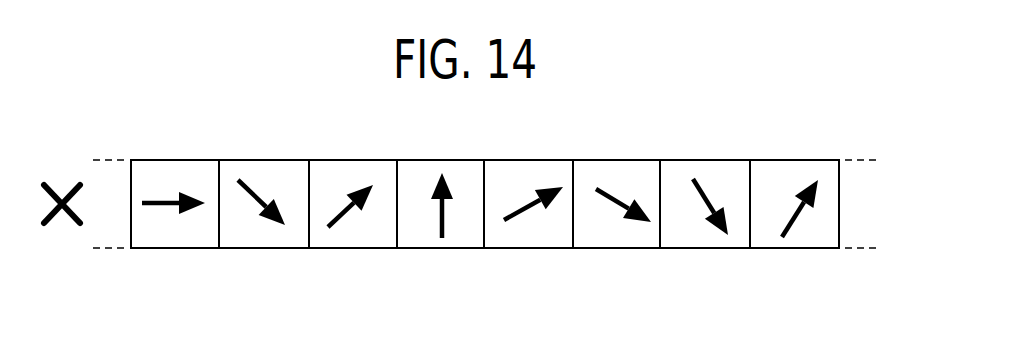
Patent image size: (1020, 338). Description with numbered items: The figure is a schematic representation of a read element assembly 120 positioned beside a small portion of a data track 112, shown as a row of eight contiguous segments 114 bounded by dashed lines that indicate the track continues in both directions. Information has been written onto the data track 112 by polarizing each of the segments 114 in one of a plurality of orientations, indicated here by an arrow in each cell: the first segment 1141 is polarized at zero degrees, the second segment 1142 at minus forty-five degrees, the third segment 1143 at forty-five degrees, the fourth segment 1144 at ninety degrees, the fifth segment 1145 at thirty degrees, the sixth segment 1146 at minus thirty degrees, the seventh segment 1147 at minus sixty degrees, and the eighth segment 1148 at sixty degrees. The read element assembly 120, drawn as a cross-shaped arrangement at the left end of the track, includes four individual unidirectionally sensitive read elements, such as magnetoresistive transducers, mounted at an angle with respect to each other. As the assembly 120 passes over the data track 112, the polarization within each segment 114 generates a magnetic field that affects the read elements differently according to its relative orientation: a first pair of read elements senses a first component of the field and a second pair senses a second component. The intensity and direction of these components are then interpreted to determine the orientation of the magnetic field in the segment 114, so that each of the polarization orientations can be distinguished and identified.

The data track 112 is at (623, 160).
The contiguous segments 114 is at (485, 226).
The first segment 1141 is at (175, 226).
The second segment 1142 is at (264, 226).
The third segment 1143 is at (353, 226).
The fourth segment 1144 is at (440, 226).
The fifth segment 1145 is at (528, 226).
The sixth segment 1146 is at (616, 226).
The seventh segment 1147 is at (705, 226).
The eighth segment 1148 is at (794, 226).
The read element assembly 120 is at (63, 176).